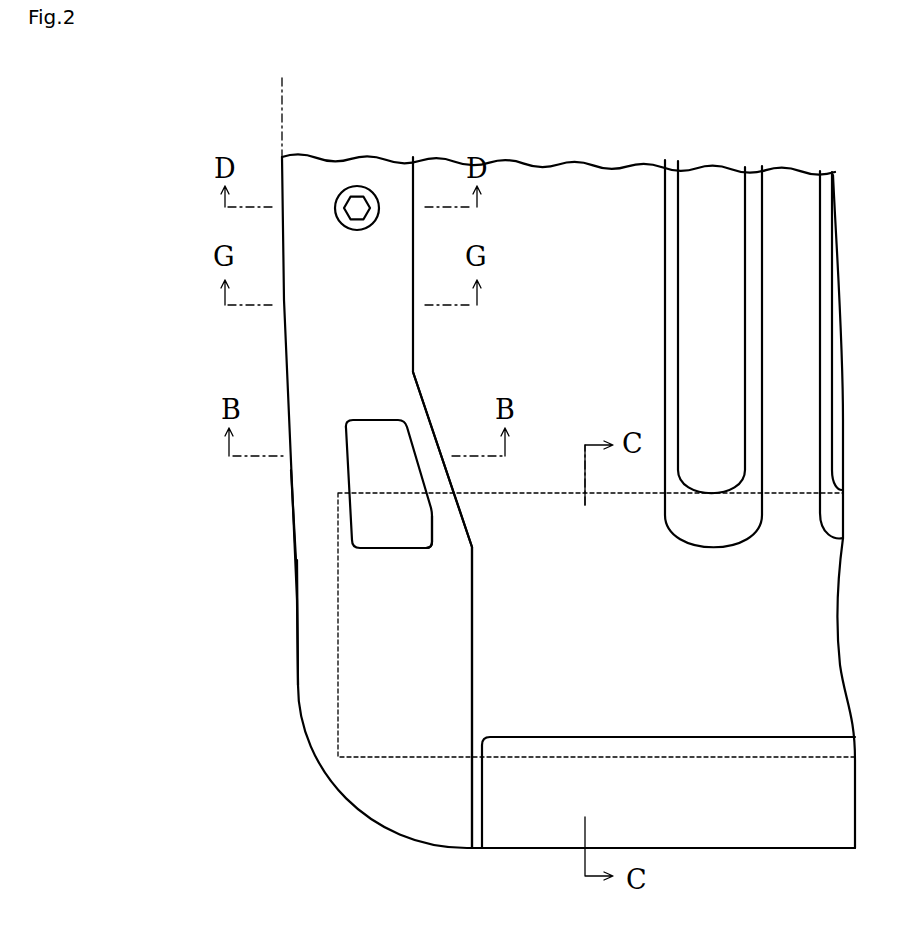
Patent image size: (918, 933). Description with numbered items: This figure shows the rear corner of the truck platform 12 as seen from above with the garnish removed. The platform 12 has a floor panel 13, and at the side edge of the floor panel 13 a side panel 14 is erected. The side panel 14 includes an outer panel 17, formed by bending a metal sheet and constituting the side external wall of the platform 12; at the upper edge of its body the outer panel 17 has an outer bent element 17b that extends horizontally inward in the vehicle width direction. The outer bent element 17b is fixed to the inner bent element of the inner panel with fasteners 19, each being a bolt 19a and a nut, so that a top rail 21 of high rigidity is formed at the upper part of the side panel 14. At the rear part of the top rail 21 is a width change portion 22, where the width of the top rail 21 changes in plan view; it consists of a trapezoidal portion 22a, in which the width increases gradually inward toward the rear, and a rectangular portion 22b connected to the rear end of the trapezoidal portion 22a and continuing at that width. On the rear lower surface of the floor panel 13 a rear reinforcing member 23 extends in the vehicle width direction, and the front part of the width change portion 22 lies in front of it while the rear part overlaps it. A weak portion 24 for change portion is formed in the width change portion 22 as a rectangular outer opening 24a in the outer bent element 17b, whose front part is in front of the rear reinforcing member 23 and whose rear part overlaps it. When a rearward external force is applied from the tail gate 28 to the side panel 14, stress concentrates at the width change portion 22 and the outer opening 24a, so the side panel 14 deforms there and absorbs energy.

The platform 12 is at (283, 340).
The floor panel 13 is at (625, 180).
The side panel 14 is at (290, 497).
The outer panel 17 is at (296, 583).
The outer bent element 17b is at (328, 361).
The fastener 19 is at (357, 181).
The bolt 19a is at (368, 189).
The top rail 21 is at (320, 556).
The width change portion 22 is at (597, 284).
The trapezoidal portion 22a is at (425, 402).
The rectangular portion 22b is at (474, 577).
The rear reinforcing member 23 is at (390, 757).
The weak portion for change portion 24 is at (372, 543).
The outer opening 24a is at (413, 548).
The tail gate 28 is at (678, 850).